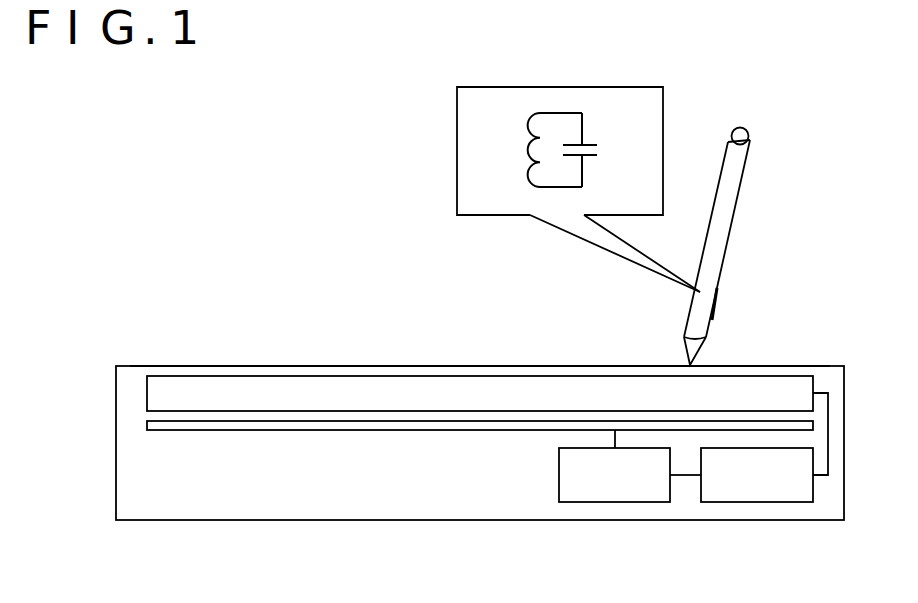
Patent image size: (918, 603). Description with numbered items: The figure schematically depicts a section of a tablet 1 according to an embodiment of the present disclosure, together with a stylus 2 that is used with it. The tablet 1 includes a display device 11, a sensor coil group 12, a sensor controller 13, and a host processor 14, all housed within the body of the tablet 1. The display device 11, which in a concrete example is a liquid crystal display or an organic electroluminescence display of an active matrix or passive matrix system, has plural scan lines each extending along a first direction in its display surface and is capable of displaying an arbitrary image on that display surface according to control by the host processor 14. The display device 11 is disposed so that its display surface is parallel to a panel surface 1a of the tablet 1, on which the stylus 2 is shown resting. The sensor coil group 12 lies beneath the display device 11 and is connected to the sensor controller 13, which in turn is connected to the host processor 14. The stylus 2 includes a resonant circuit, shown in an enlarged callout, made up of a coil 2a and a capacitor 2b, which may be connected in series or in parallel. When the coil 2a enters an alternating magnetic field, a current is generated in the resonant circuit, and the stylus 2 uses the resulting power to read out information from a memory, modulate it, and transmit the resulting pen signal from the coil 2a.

The tablet 1 is at (479, 521).
The panel surface 1a is at (355, 365).
The stylus 2 is at (720, 195).
The coil 2a is at (527, 156).
The capacitor 2b is at (590, 141).
The display device 11 is at (147, 391).
The sensor coil group 12 is at (147, 424).
The sensor controller 13 is at (628, 489).
The host processor 14 is at (770, 489).